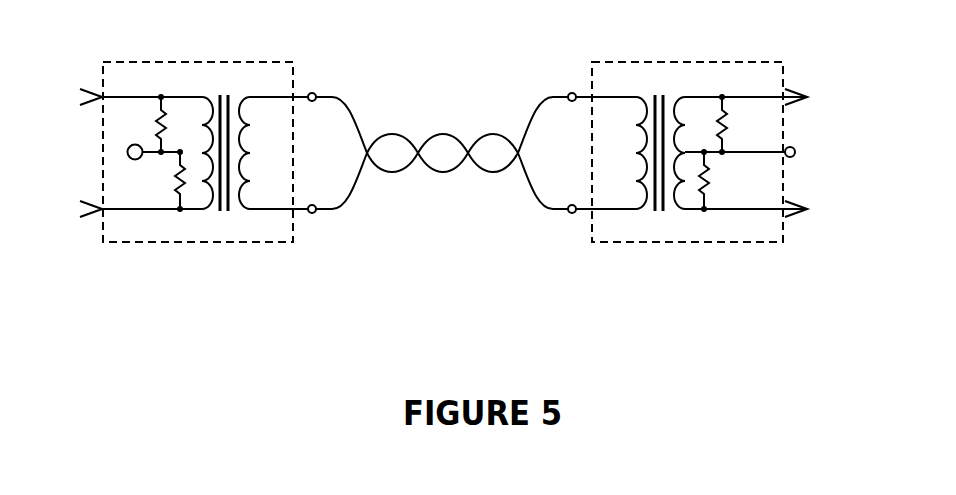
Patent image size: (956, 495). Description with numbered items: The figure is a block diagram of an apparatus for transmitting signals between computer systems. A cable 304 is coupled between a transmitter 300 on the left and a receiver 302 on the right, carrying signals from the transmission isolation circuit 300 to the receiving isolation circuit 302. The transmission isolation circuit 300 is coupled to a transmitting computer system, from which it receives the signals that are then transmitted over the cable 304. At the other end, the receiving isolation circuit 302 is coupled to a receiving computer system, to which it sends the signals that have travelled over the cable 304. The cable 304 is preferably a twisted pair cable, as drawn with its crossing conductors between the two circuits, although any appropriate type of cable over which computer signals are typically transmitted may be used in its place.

The transmission isolation circuit 300 is at (260, 61).
The receiving isolation circuit 302 is at (616, 61).
The cable 304 is at (443, 133).